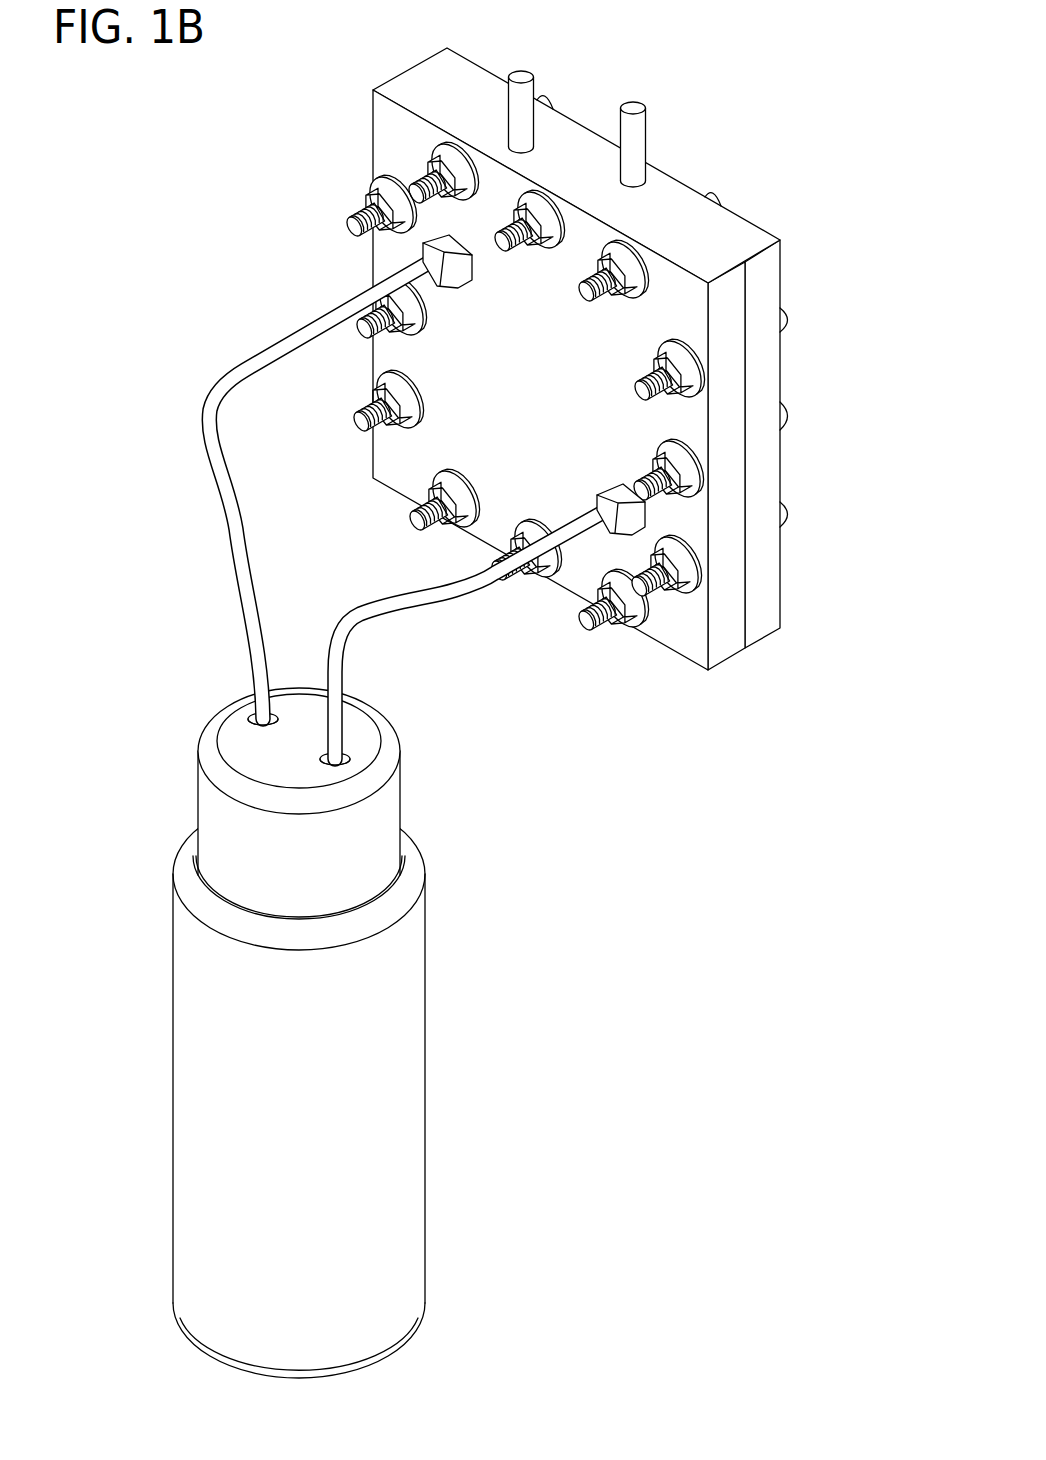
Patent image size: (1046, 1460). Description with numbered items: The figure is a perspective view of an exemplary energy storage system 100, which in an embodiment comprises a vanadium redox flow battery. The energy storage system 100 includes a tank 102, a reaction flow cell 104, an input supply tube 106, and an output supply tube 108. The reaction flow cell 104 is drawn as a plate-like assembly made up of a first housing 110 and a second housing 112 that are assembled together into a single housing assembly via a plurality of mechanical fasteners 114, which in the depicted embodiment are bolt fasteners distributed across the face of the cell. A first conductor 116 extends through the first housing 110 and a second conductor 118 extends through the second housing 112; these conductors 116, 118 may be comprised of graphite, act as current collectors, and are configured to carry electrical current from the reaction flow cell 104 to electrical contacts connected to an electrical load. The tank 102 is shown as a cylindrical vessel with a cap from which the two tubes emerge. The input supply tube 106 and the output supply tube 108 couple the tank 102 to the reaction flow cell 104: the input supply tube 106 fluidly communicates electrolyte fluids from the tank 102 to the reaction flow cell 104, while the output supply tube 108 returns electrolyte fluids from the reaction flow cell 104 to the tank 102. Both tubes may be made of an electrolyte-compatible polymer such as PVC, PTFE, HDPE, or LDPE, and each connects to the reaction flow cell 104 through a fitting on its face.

The energy storage system 100 is at (142, 149).
The tank 102 is at (393, 1111).
The reaction flow cell 104 is at (752, 232).
The input supply tube 106 is at (433, 607).
The output supply tube 108 is at (246, 392).
The first housing 110 is at (717, 647).
The second housing 112 is at (767, 593).
The mechanical fasteners 114 is at (352, 208).
The first conductor 116 is at (523, 74).
The second conductor 118 is at (634, 104).